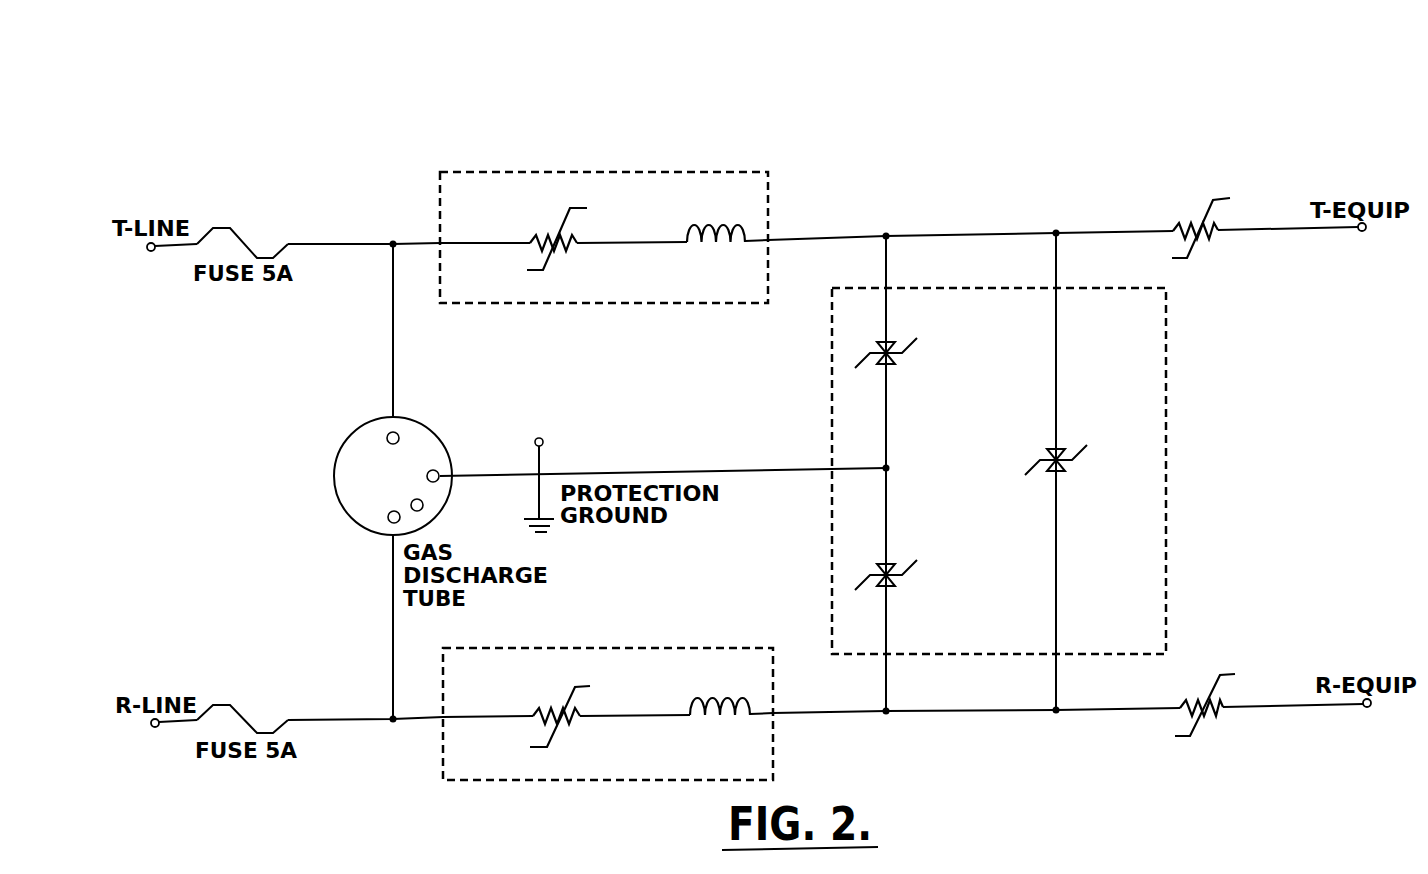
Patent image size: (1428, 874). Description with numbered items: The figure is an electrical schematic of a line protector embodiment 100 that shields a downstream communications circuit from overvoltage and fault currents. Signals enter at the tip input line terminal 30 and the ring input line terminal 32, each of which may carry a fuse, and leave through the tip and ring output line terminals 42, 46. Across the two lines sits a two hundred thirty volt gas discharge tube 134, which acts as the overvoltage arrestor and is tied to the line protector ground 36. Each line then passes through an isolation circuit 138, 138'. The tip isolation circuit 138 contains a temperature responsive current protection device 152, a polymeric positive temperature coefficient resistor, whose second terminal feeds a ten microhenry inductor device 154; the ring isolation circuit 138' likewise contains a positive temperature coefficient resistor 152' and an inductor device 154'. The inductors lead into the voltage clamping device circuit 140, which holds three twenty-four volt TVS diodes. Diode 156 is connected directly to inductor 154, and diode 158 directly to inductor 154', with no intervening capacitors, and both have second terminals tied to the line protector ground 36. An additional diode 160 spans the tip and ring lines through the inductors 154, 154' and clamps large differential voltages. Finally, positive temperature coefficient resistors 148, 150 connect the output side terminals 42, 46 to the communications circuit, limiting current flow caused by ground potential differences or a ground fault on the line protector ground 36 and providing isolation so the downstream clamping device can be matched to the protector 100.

The line protector embodiment 100 is at (778, 426).
The tip input line terminal 30 is at (133, 259).
The ring input line terminal 32 is at (137, 736).
The tip output line terminal 42 is at (1340, 268).
The ring output line terminal 46 is at (1344, 744).
The line protector ground 36 is at (555, 530).
The gas discharge tube 134 is at (432, 432).
The isolation circuit 138 is at (606, 218).
The isolation circuit 138' is at (610, 695).
The voltage clamping device circuit 140 is at (999, 451).
The positive temperature coefficient resistor 148 is at (1222, 240).
The positive temperature coefficient resistor 150 is at (1227, 717).
The temperature responsive current protection device 152 is at (532, 202).
The temperature responsive current protection device 152' is at (531, 678).
The inductor device 154 is at (682, 188).
The inductor device 154' is at (685, 662).
The diode 156 is at (910, 373).
The diode 158 is at (910, 594).
The diode 160 is at (1082, 441).